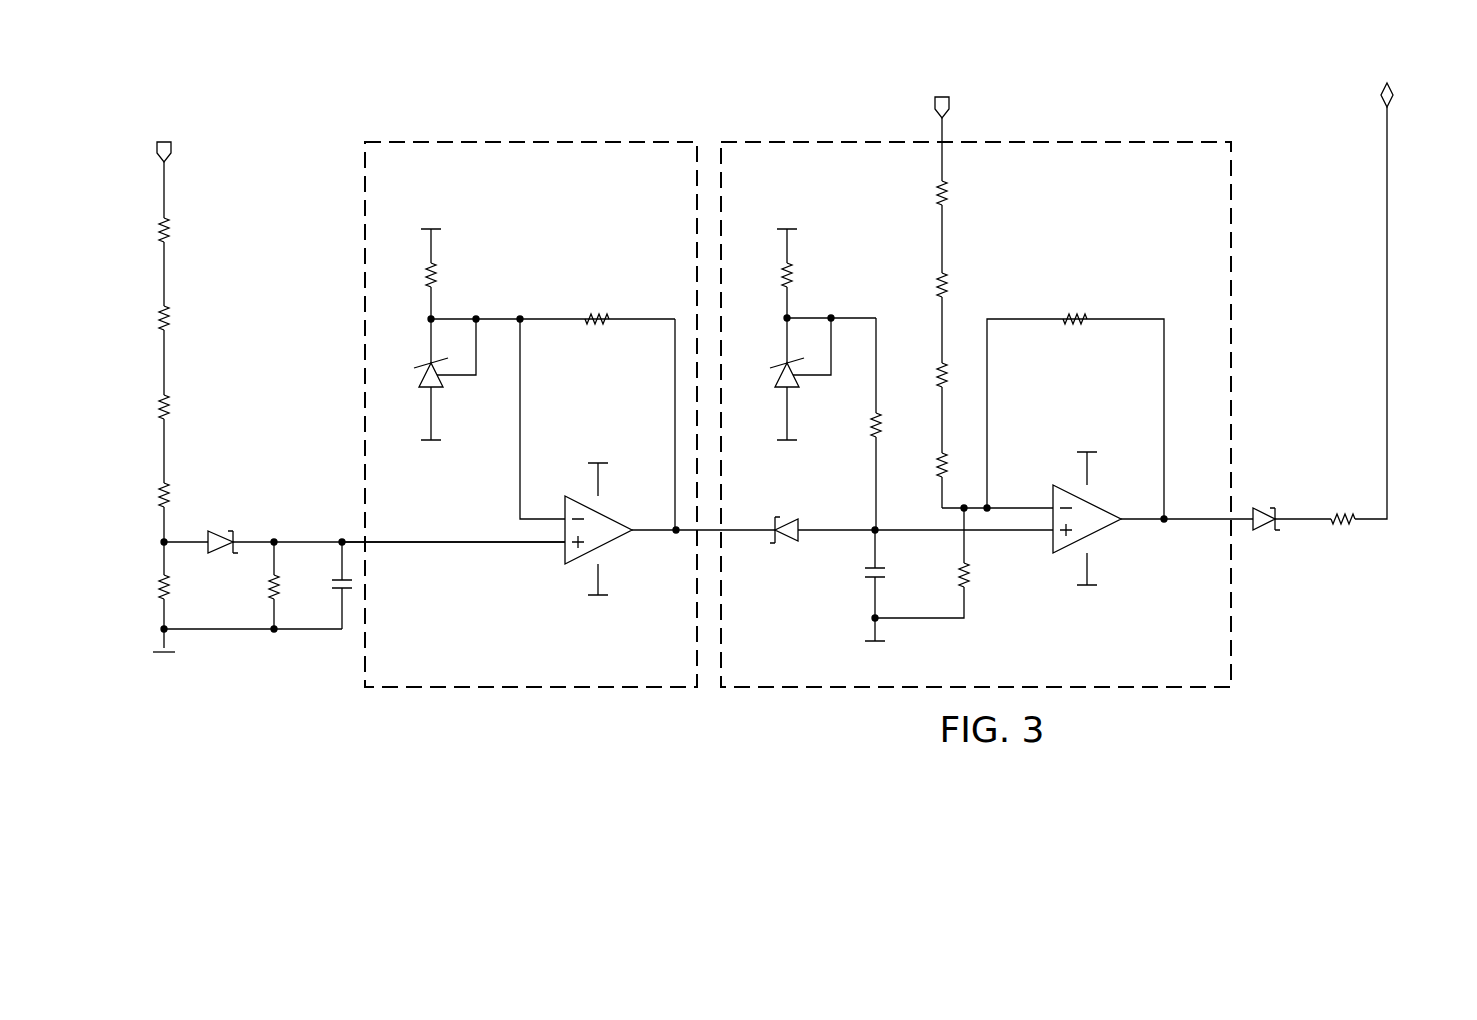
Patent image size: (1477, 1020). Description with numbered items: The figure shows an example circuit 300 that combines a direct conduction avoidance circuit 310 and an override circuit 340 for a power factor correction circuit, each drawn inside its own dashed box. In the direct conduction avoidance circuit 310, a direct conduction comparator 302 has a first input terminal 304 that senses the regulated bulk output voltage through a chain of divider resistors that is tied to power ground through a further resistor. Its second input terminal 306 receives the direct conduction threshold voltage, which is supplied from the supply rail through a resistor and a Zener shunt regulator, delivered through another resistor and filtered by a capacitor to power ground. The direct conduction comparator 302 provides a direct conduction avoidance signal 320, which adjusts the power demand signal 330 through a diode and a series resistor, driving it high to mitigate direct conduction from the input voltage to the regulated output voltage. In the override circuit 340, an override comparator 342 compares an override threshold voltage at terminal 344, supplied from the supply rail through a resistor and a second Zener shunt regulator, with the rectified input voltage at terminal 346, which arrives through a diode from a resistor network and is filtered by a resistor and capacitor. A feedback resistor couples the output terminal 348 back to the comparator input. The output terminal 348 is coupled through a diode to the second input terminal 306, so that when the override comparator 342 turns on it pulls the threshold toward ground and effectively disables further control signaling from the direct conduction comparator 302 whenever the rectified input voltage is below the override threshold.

The circuit 300 is at (672, 62).
The override circuit 340 is at (480, 140).
The direct conduction avoidance circuit 310 is at (1122, 140).
The power demand signal 330 is at (1389, 313).
The override comparator 342 is at (612, 546).
The terminal 344 is at (520, 497).
The terminal 346 is at (508, 543).
The output terminal 348 is at (674, 527).
The direct conduction comparator 302 is at (1105, 506).
The first input terminal 304 is at (1030, 506).
The second input terminal 306 is at (1020, 533).
The direct conduction avoidance signal 320 is at (1185, 522).